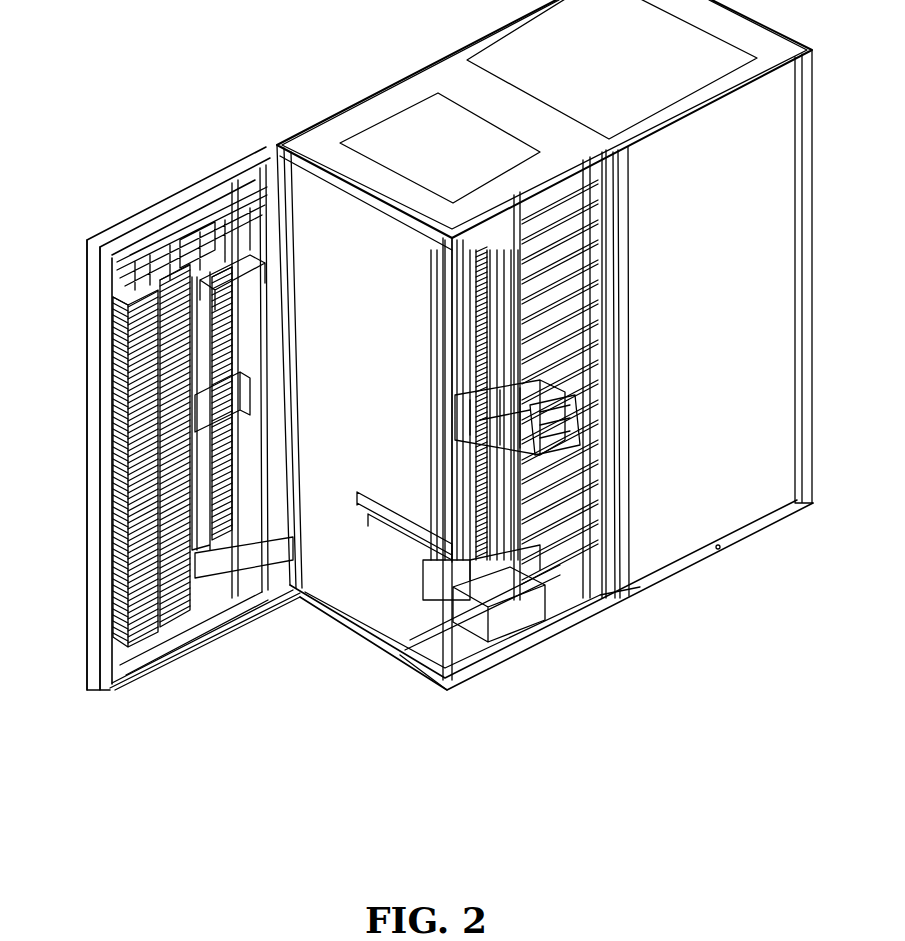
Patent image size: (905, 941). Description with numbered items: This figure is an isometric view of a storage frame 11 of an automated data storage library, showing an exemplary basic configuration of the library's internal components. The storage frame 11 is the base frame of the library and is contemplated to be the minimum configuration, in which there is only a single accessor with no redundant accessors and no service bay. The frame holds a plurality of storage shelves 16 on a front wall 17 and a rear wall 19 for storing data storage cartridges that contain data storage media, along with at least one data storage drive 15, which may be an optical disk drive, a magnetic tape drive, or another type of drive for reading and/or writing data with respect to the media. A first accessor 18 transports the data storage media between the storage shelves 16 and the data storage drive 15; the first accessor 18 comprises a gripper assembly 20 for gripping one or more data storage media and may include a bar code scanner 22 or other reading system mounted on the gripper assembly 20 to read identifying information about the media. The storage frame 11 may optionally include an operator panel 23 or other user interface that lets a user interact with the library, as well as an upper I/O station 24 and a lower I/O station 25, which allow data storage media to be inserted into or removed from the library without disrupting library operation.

The storage frame 11 is at (338, 700).
The data storage drive 15 is at (576, 234).
The storage shelves 16 is at (110, 528).
The front wall 17 is at (98, 398).
The first accessor 18 is at (485, 608).
The rear wall 19 is at (430, 272).
The gripper assembly 20 is at (565, 421).
The bar code scanner 22 is at (463, 450).
The operator panel 23 is at (255, 245).
The upper I/O station 24 is at (242, 276).
The lower I/O station 25 is at (232, 444).